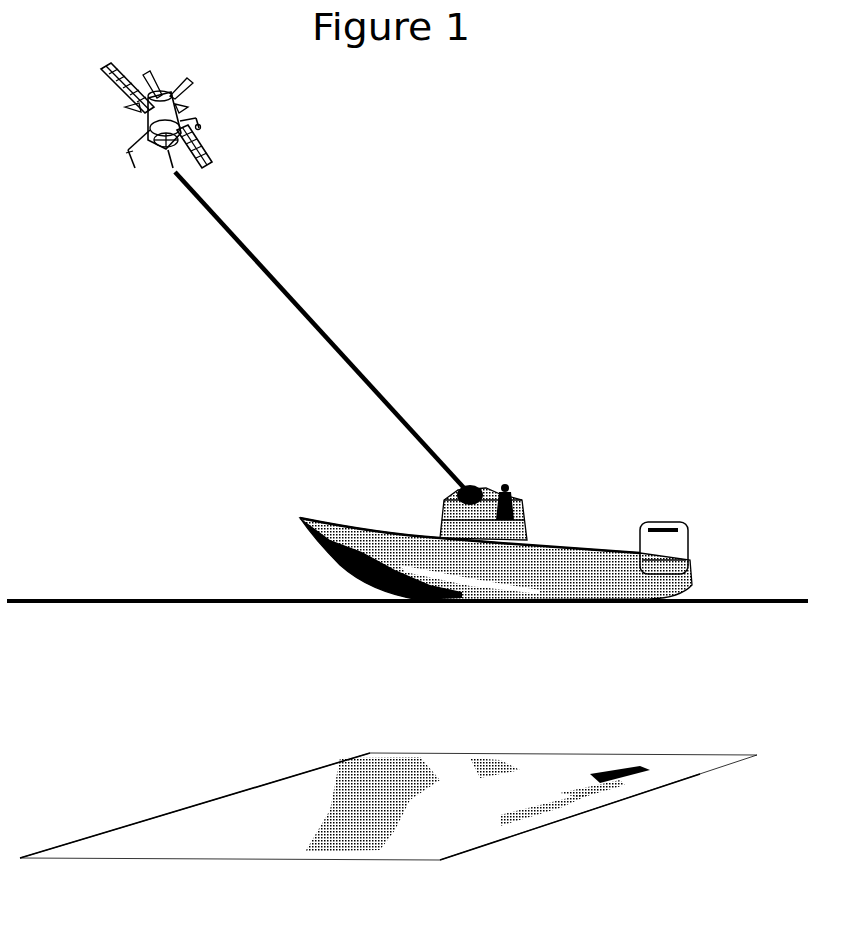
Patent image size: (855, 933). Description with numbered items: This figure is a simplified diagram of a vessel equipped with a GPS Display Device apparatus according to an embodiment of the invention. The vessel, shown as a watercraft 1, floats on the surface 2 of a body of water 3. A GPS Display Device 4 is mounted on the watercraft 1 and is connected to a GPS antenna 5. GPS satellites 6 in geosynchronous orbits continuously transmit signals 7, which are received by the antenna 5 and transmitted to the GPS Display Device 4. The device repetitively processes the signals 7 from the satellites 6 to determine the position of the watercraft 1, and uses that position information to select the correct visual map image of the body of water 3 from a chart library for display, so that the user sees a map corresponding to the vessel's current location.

The watercraft 1 is at (496, 519).
The surface 2 is at (407, 585).
The body of water 3 is at (388, 806).
The GPS Display Device 4 is at (505, 472).
The GPS antenna 5 is at (470, 495).
The GPS satellites 6 is at (181, 115).
The signals 7 is at (320, 330).